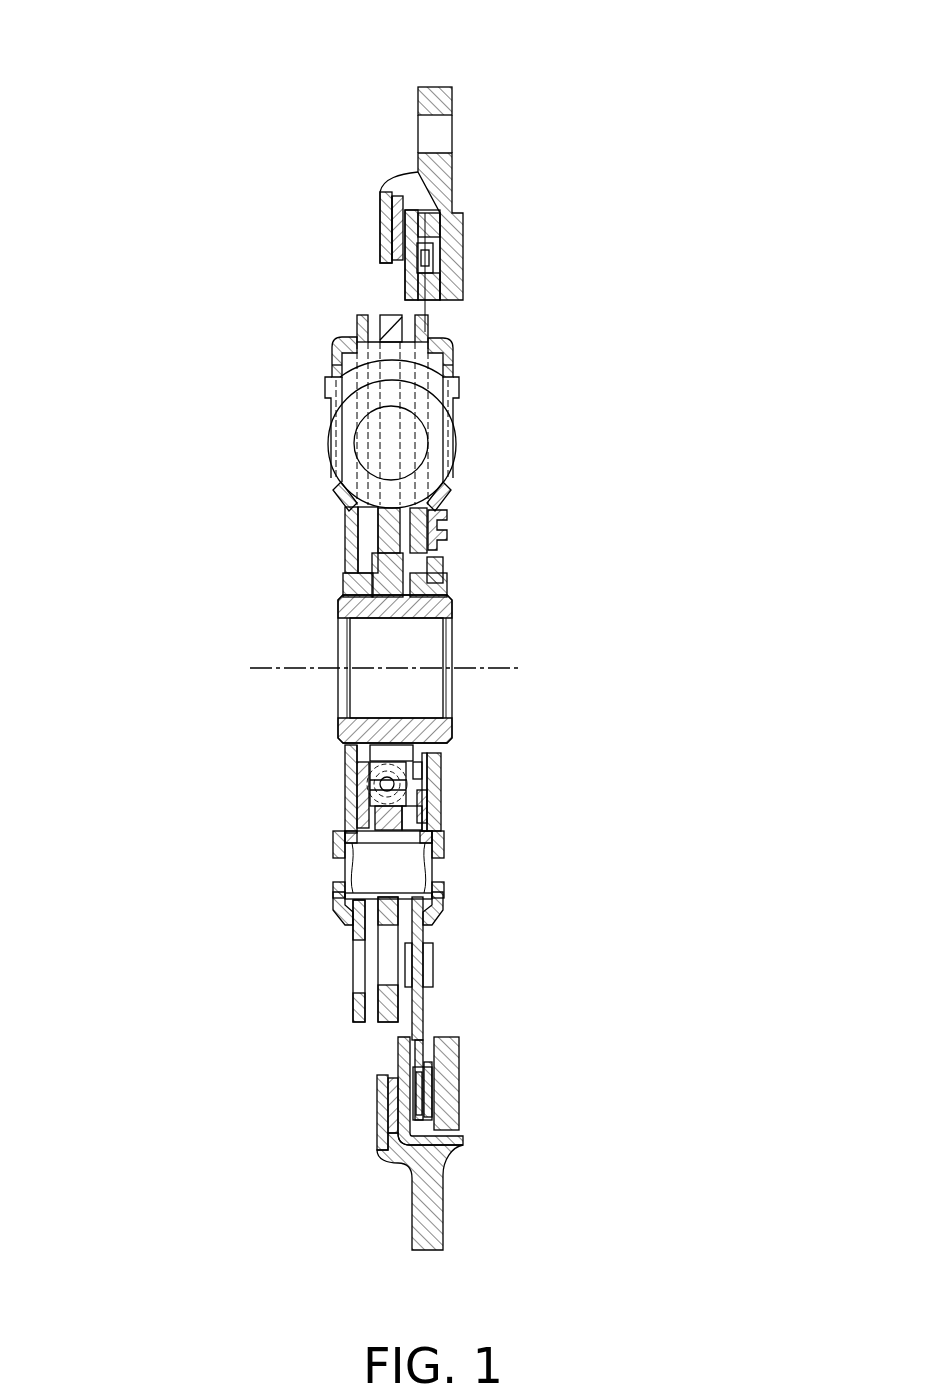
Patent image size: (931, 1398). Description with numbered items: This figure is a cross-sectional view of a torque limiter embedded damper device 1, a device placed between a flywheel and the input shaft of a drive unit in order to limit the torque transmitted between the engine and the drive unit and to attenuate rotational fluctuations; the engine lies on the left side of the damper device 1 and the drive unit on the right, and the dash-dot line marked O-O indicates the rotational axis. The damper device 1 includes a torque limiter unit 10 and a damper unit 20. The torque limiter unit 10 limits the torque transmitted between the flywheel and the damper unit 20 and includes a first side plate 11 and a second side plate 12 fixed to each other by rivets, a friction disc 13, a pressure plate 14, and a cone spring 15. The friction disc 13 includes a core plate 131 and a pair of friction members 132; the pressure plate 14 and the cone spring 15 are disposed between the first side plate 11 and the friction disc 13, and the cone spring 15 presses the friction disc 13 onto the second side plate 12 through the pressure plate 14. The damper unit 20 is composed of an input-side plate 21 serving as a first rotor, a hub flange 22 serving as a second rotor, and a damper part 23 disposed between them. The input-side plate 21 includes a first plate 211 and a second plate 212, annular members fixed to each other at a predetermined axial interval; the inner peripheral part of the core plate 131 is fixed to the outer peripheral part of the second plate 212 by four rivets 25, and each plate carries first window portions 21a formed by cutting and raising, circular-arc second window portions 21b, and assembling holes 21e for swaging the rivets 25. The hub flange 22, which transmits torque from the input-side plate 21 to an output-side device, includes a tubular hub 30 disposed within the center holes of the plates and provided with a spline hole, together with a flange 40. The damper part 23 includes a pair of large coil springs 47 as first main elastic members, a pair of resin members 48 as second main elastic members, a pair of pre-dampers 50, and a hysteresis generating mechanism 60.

The torque limiter embedded damper device 1 is at (165, 130).
The torque limiter unit 10 is at (503, 115).
The first side plate 11 is at (380, 193).
The second side plate 12 is at (452, 168).
The friction disc 13 is at (462, 213).
The pressure plate 14 is at (405, 270).
The cone spring 15 is at (392, 222).
The damper unit 20 is at (210, 365).
The input-side plate 21 is at (459, 333).
The first window portions 21a is at (457, 360).
The second window portions 21b is at (332, 875).
The assembling holes 21e is at (353, 955).
The hub flange 22 is at (330, 603).
The damper part 23 is at (317, 452).
The rivets 25 is at (436, 953).
The hub 30 is at (450, 593).
The flange 40 is at (353, 1000).
The large coil springs 47 is at (445, 405).
The resin members 48 is at (441, 840).
The pre-dampers 50 is at (450, 722).
The hysteresis generating mechanism 60 is at (338, 782).
The core plate 131 is at (424, 1007).
The friction members 132 is at (422, 1085).
The first plate 211 is at (337, 495).
The second plate 212 is at (445, 487).